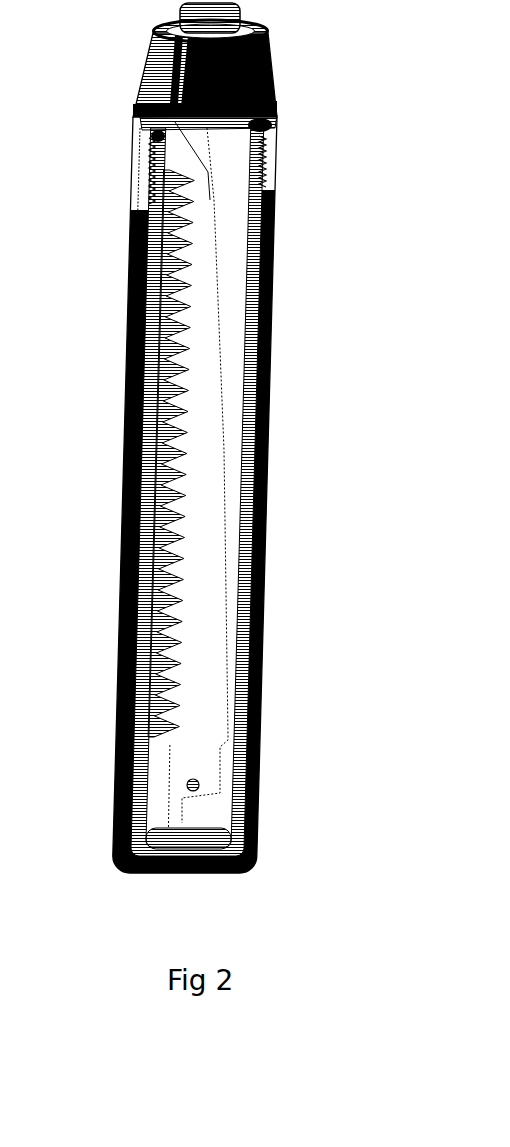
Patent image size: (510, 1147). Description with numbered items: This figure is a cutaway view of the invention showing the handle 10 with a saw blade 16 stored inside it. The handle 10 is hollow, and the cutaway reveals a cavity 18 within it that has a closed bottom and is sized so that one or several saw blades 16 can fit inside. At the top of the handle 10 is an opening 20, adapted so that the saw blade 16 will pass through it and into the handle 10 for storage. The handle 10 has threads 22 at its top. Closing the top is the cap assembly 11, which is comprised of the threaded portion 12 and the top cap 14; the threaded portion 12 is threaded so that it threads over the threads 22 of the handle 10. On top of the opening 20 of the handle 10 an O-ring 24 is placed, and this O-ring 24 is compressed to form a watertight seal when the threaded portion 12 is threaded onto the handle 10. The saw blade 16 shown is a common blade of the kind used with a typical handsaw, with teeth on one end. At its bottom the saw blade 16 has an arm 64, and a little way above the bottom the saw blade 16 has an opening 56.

The handle 10 is at (272, 313).
The cap assembly 11 is at (283, 102).
The threaded portion 12 is at (140, 162).
The top cap 14 is at (157, 120).
The saw blade 16 is at (197, 267).
The cavity 18 is at (235, 438).
The opening 20 is at (207, 128).
The threads 22 is at (262, 163).
The O-ring 24 is at (205, 127).
The opening 56 is at (197, 783).
The arm 64 is at (177, 817).